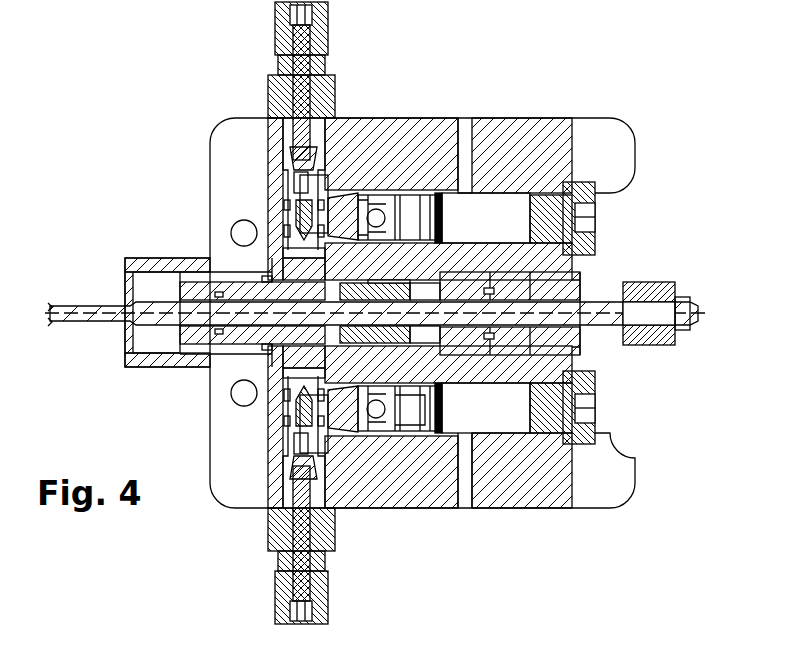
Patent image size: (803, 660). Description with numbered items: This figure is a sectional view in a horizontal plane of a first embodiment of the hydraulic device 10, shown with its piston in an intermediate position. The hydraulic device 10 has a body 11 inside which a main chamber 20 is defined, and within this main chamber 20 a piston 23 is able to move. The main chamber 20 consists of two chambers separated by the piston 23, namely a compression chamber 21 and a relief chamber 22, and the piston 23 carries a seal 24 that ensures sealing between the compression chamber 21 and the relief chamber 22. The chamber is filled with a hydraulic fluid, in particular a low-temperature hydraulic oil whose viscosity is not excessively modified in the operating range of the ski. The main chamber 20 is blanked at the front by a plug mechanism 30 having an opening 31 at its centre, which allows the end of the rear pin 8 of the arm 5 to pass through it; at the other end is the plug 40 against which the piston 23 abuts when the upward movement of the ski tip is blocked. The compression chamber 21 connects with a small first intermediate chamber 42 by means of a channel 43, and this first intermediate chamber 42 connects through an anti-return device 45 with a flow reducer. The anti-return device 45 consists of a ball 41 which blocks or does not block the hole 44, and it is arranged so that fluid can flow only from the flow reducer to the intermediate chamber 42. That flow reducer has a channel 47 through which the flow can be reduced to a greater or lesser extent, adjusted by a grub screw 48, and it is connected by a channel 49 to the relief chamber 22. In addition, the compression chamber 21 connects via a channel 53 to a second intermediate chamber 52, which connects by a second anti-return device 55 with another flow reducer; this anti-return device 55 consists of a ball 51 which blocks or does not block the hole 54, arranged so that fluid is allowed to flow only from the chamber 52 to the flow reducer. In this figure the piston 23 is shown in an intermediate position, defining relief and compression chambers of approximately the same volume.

The arm 5 is at (66, 302).
The rear pin 8 is at (600, 318).
The hydraulic device 10 is at (104, 129).
The body 11 is at (347, 140).
The main chamber 20 is at (417, 292).
The compression chamber 21 is at (425, 240).
The relief chamber 22 is at (300, 172).
The piston 23 is at (388, 422).
The seal 24 is at (290, 374).
The plug mechanism 30 is at (182, 280).
The opening 31 is at (180, 280).
The plug 40 is at (570, 286).
The ball 41 is at (400, 197).
The first intermediate chamber 42 is at (487, 213).
The channel 43 is at (505, 245).
The hole 44 is at (348, 293).
The anti-return device 45 is at (389, 176).
The channel 47 is at (300, 225).
The grub screw 48 is at (330, 240).
The channel 49 is at (262, 268).
The ball 51 is at (367, 427).
The second intermediate chamber 52 is at (475, 412).
The channel 53 is at (493, 400).
The hole 54 is at (395, 418).
The anti-return device 55 is at (388, 440).